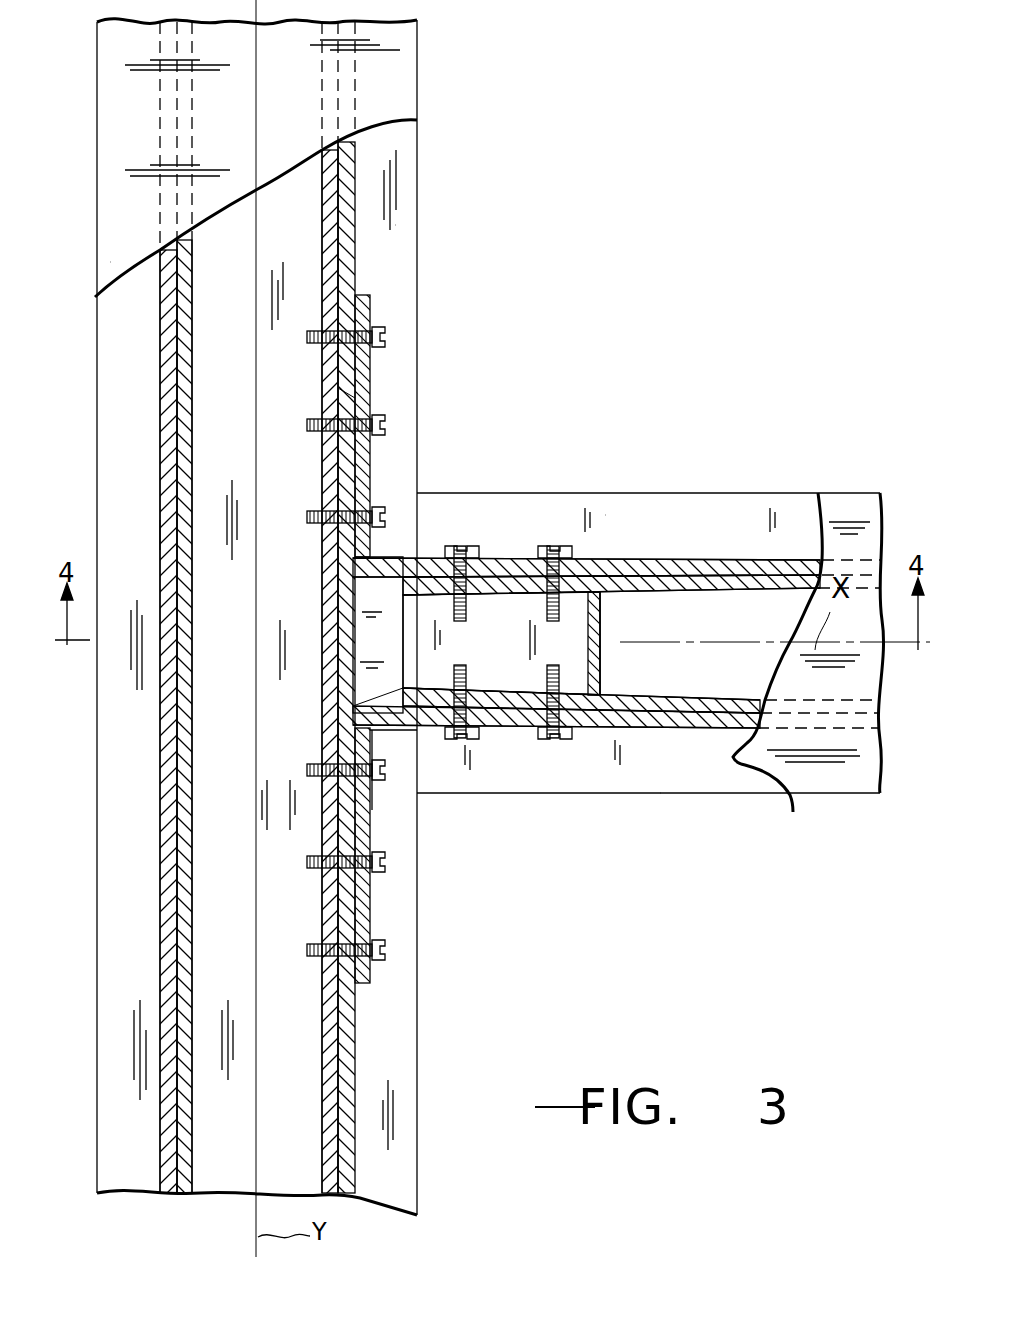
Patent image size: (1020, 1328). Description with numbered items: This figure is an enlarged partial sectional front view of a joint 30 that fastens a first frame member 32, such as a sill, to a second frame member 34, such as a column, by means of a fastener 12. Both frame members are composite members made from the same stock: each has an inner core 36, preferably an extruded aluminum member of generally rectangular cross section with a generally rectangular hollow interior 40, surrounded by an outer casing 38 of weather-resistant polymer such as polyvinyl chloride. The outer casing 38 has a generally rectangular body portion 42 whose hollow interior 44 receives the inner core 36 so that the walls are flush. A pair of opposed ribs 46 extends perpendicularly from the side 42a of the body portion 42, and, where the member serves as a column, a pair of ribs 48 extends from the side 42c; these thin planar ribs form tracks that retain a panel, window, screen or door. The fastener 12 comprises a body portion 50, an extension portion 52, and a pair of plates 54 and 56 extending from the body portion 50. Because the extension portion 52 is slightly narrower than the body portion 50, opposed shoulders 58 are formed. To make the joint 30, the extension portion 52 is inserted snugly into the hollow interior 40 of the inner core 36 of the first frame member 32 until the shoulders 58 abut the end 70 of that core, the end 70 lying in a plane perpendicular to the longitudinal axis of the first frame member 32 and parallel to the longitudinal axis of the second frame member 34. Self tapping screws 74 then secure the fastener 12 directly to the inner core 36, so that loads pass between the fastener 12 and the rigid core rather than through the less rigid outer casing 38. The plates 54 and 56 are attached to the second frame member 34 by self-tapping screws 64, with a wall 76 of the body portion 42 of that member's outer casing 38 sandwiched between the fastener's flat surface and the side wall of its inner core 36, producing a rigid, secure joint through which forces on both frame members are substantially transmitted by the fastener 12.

The fastener 12 is at (600, 615).
The joint 30 is at (518, 408).
The first frame member 32 is at (750, 490).
The second frame member 34 is at (420, 140).
The inner core 36 is at (700, 590).
The outer casing 38 is at (158, 380).
The hollow interior 40 is at (700, 688).
The body portion 42 is at (342, 485).
The side 42a is at (365, 482).
The side 42c is at (163, 535).
The hollow interior 44 is at (338, 92).
The ribs 46 is at (395, 225).
The ribs 48 is at (117, 310).
The body portion 50 is at (380, 590).
The extension portion 52 is at (570, 660).
The plate 54 is at (372, 805).
The plate 56 is at (380, 300).
The shoulders 58 is at (432, 700).
The self-tapping screws 64 is at (385, 400).
The end 70 is at (405, 706).
The self tapping screws 74 is at (553, 544).
The wall 76 is at (348, 392).